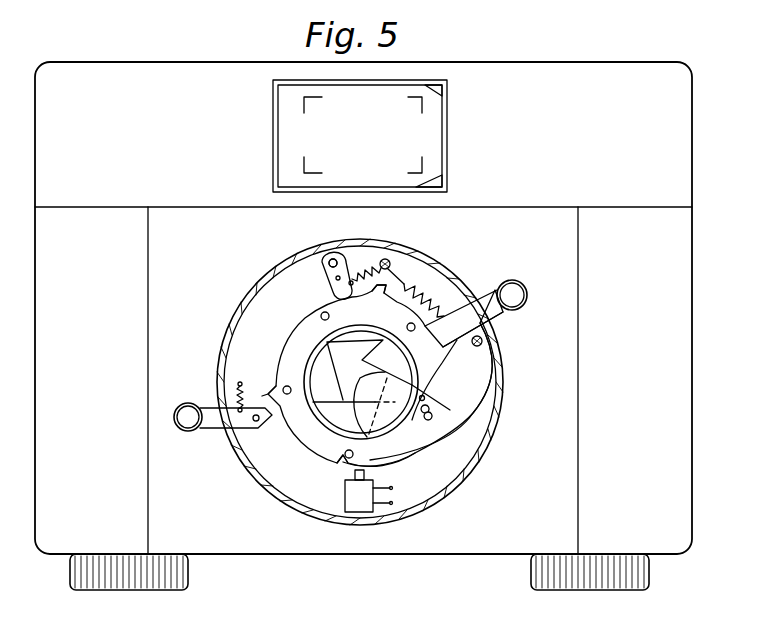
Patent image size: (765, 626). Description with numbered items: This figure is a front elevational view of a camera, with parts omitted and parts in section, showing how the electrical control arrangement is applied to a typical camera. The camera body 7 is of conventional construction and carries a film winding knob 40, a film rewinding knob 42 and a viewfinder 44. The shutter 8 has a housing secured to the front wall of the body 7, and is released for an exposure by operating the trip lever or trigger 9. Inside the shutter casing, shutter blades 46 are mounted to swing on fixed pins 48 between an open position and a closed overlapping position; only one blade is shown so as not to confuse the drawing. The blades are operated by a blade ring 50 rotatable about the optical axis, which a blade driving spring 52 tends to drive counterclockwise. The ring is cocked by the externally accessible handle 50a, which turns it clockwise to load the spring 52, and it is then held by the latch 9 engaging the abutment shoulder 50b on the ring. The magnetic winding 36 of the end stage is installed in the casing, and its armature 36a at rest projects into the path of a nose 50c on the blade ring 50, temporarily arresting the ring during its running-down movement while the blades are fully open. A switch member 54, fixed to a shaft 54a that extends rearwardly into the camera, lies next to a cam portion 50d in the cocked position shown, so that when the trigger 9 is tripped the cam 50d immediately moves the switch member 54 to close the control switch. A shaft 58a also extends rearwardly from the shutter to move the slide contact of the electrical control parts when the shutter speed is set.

The camera body 7 is at (437, 545).
The shutter 8 is at (240, 310).
The trip lever 9 is at (188, 403).
The magnetic winding 36 is at (353, 497).
The armature 36a is at (383, 466).
The film winding knob 40 is at (185, 578).
The film rewinding knob 42 is at (542, 573).
The viewfinder 44 is at (289, 98).
The shutter blades 46 is at (463, 413).
The fixed pins 48 is at (426, 396).
The blade ring 50 is at (313, 318).
The handle 50a is at (517, 302).
The abutment shoulder 50b is at (275, 381).
The nose 50c is at (335, 462).
The cam portion 50d is at (440, 270).
The blade driving spring 52 is at (404, 282).
The switch member 54 is at (330, 281).
The shaft 54a is at (333, 262).
The shaft 58a is at (483, 345).